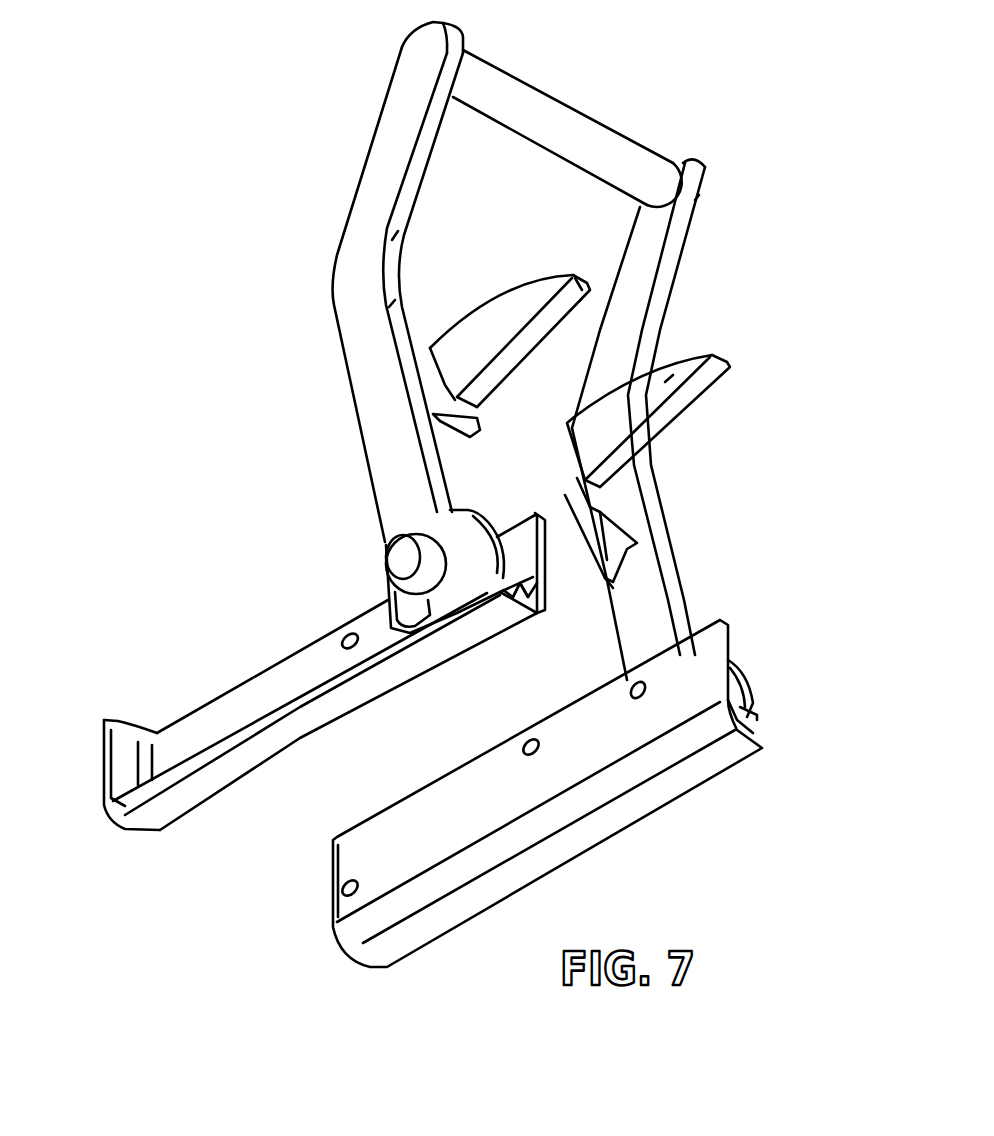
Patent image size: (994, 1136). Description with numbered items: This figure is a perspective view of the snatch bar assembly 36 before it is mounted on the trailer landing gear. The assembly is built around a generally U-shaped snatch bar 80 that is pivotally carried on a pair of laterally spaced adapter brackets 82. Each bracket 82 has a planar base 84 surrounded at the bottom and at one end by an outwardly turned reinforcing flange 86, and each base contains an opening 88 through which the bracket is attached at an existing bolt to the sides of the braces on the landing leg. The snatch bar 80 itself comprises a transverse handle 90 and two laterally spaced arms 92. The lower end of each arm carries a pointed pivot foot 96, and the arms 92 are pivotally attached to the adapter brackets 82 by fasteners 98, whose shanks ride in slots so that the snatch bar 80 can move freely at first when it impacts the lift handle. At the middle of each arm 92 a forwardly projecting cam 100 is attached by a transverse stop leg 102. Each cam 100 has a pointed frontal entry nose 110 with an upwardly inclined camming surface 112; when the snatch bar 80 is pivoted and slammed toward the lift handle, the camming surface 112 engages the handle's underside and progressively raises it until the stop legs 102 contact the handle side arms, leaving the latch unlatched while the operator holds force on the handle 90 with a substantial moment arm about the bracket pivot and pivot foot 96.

The snatch bar assembly 36 is at (445, 506).
The snatch bar 80 is at (472, 340).
The adapter brackets 82 is at (410, 715).
The planar bases 84 is at (346, 624).
The reinforcing flange 86 is at (132, 775).
The opening 88 is at (524, 750).
The transverse handle 90 is at (617, 133).
The arms 92 is at (333, 266).
The pivot foot 96 is at (497, 573).
The fasteners 98 is at (403, 550).
The cams 100 is at (523, 312).
The stop legs 102 is at (432, 417).
The entry nose 110 is at (575, 276).
The camming surface 112 is at (490, 300).